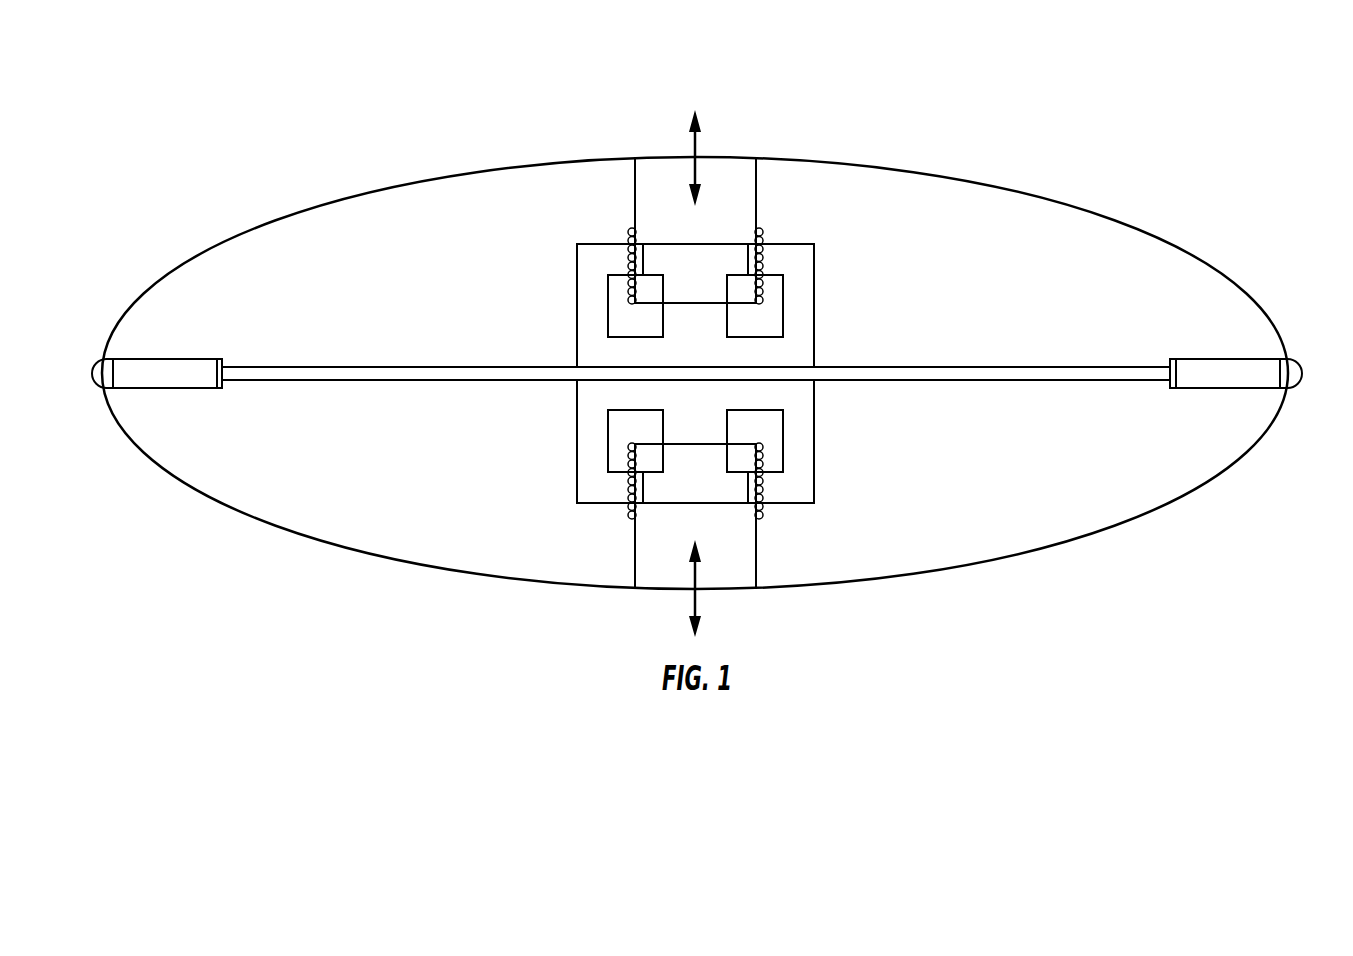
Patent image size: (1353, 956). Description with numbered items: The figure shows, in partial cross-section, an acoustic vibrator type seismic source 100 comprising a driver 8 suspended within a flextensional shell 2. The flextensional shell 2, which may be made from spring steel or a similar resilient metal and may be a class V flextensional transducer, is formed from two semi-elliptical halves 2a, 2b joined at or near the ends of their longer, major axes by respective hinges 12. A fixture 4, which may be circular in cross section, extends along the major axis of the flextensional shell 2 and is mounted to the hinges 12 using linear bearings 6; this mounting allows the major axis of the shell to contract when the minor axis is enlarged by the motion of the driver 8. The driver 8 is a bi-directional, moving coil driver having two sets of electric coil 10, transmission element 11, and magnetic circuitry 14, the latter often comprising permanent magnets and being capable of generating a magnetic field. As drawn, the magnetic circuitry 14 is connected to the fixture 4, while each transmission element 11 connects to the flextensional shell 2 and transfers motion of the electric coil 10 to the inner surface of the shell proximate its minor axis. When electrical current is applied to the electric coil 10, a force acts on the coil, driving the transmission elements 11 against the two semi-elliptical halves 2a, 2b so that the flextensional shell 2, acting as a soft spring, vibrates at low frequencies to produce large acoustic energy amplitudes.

The seismic source 100 is at (353, 118).
The flextensional shell 2 is at (1183, 498).
The semi-elliptical half 2a is at (1183, 248).
The semi-elliptical half 2b is at (1035, 552).
The fixture 4 is at (988, 366).
The linear bearings 6 is at (168, 389).
The hinges 12 is at (103, 358).
The driver 8 is at (831, 288).
The magnetic circuitry 14 is at (577, 336).
The electric coil 10 is at (778, 212).
The transmission element 11 is at (635, 200).